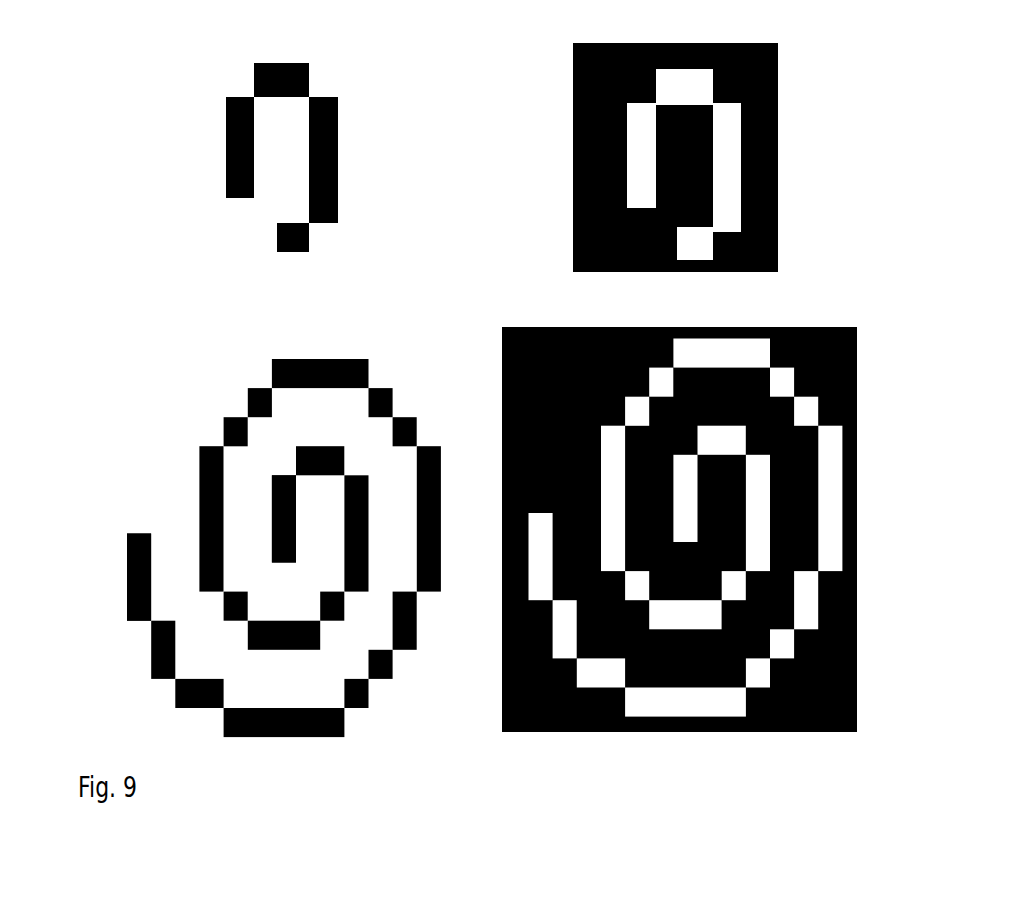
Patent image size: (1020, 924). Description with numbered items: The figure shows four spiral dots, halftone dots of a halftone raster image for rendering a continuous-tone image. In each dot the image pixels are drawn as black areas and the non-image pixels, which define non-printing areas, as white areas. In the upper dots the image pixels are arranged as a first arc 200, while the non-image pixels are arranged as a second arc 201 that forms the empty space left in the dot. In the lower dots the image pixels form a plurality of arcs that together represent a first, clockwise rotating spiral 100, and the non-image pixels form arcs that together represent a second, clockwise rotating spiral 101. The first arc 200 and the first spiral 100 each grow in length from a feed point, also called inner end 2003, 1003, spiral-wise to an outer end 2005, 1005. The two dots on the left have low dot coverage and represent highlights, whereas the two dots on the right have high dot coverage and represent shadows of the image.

The first, clockwise rotating spiral 100 is at (127, 558).
The second, clockwise rotating spiral 101 is at (183, 600).
The feed point (inner end) of the first spiral 1003 is at (272, 555).
The outer end of the first spiral 1005 is at (128, 545).
The first arc 200 is at (226, 117).
The second arc 201 is at (268, 182).
The feed point (inner end) of the first arc 2003 is at (227, 187).
The outer end of the first arc 2005 is at (310, 240).